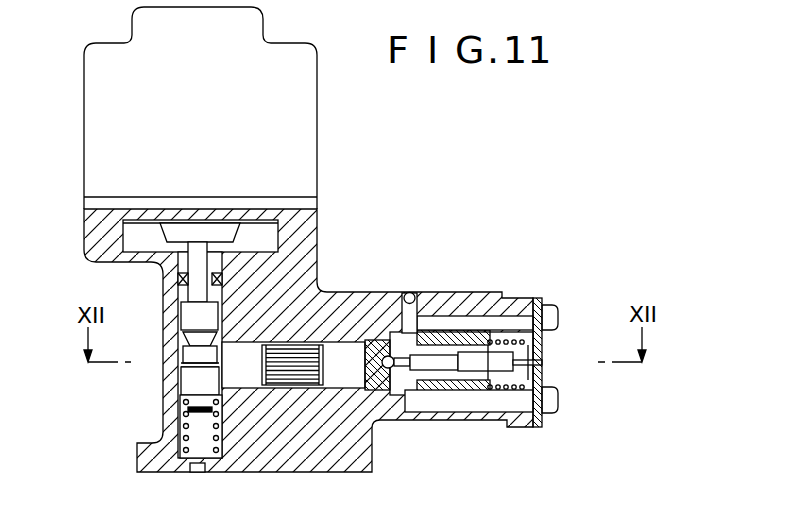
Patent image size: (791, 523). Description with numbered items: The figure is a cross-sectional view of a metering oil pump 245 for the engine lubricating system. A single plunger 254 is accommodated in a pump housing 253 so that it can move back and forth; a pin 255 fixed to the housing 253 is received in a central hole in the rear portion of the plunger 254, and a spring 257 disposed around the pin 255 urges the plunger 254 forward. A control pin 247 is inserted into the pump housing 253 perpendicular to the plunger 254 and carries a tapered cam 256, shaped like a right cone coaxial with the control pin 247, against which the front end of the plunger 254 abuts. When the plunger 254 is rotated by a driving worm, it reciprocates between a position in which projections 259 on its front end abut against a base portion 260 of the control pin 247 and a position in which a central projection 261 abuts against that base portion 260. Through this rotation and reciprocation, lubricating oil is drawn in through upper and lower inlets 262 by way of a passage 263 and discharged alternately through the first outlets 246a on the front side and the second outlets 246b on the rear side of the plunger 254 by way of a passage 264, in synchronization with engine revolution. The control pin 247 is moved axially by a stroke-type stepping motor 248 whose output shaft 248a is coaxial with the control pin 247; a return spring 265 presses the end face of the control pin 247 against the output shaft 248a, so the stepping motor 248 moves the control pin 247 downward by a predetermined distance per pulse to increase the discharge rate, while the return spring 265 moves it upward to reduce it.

The metering oil pump 245 is at (572, 237).
The first outlets 246a is at (376, 333).
The second outlets 246b is at (462, 326).
The control pin 247 is at (188, 314).
The stepping motor 248 is at (98, 113).
The output shaft 248a is at (198, 248).
The pump housing 253 is at (298, 460).
The plunger 254 is at (345, 380).
The pin 255 is at (542, 358).
The tapered cam 256 is at (185, 345).
The spring 257 is at (520, 383).
The projections 259 is at (223, 394).
The base portion 260 is at (197, 382).
The central projection 261 is at (185, 364).
The upper and lower inlets 262 is at (412, 334).
The passage 263 is at (388, 346).
The passage 264 is at (453, 380).
The return spring 265 is at (184, 444).